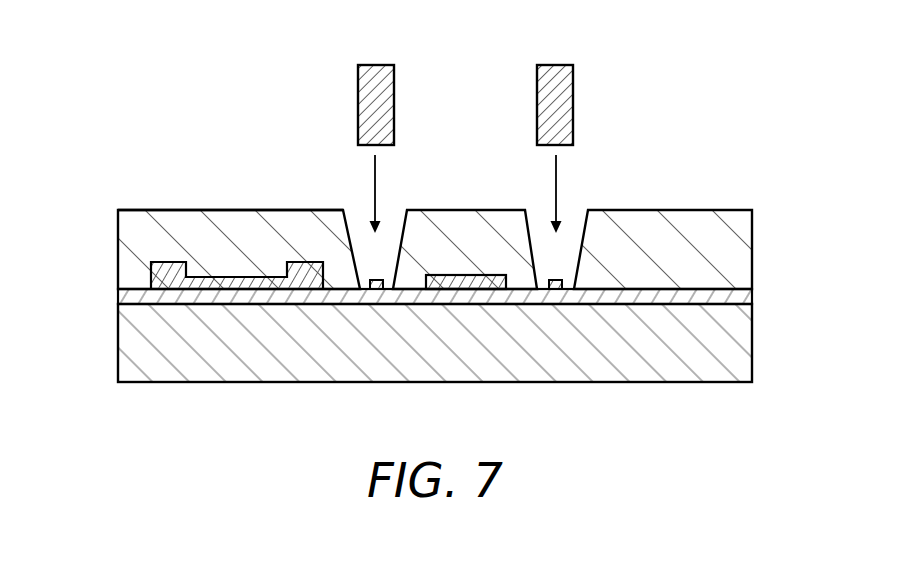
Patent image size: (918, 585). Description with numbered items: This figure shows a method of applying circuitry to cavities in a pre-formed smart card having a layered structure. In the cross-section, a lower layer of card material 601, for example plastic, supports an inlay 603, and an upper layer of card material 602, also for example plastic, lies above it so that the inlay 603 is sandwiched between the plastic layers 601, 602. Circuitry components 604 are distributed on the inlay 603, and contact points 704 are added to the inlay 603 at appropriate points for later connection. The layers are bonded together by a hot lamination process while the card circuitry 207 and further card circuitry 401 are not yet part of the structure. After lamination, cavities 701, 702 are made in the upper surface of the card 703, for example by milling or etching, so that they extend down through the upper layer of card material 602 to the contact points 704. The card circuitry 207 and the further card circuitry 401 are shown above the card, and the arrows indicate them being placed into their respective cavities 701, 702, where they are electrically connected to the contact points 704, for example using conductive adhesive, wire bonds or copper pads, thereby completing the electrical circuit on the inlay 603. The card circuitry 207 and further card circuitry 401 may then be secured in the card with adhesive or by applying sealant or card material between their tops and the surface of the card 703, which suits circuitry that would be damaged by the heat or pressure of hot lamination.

The card circuitry 207 is at (378, 72).
The further card circuitry 401 is at (557, 72).
The lower layer of card material 601 is at (128, 342).
The upper layer of card material 602 is at (742, 250).
The inlay 603 is at (742, 297).
The circuitry components 604 is at (158, 277).
The cavity 701 is at (390, 218).
The cavity 702 is at (570, 218).
The upper surface of the card 703 is at (225, 208).
The contact points 704 is at (374, 286).